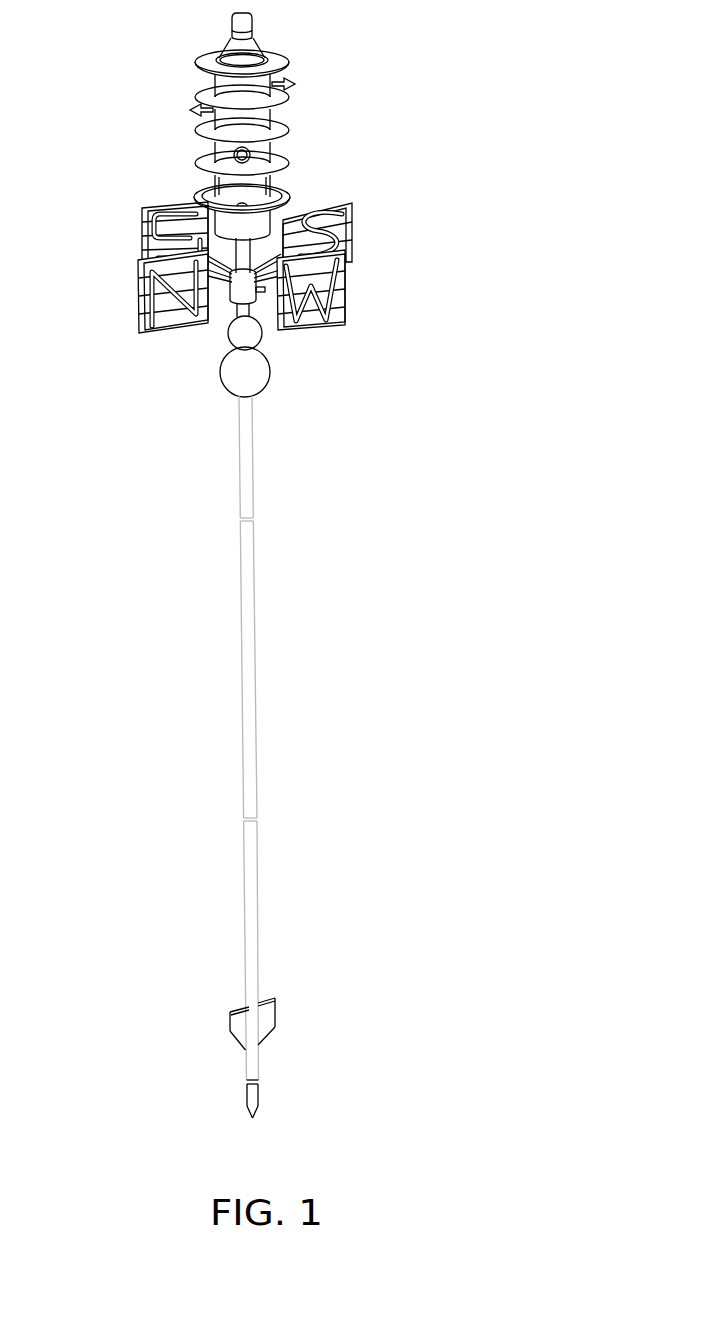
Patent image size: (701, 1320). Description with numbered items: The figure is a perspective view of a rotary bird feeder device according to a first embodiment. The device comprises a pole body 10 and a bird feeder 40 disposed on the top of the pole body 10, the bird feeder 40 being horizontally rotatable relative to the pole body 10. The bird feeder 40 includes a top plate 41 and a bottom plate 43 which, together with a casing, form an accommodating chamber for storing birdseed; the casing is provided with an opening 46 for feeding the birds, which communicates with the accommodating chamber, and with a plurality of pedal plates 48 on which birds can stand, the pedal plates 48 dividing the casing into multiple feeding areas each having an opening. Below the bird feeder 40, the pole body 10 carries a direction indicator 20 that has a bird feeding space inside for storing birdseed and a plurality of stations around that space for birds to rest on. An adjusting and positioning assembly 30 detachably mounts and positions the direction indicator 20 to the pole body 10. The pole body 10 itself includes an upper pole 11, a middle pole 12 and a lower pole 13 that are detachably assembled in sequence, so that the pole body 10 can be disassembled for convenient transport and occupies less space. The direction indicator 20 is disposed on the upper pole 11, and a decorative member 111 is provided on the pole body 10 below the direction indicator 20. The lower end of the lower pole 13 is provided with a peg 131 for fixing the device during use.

The pole body 10 is at (233, 691).
The upper pole 11 is at (247, 501).
The middle pole 12 is at (250, 672).
The lower pole 13 is at (251, 846).
The peg 131 is at (255, 1095).
The decorative member 111 is at (255, 372).
The direction indicator 20 is at (354, 241).
The adjusting and positioning assembly 30 is at (237, 285).
The bird feeder 40 is at (294, 126).
The top plate 41 is at (272, 58).
The bottom plate 43 is at (202, 197).
The opening 46 is at (234, 152).
The pedal plates 48 is at (268, 100).